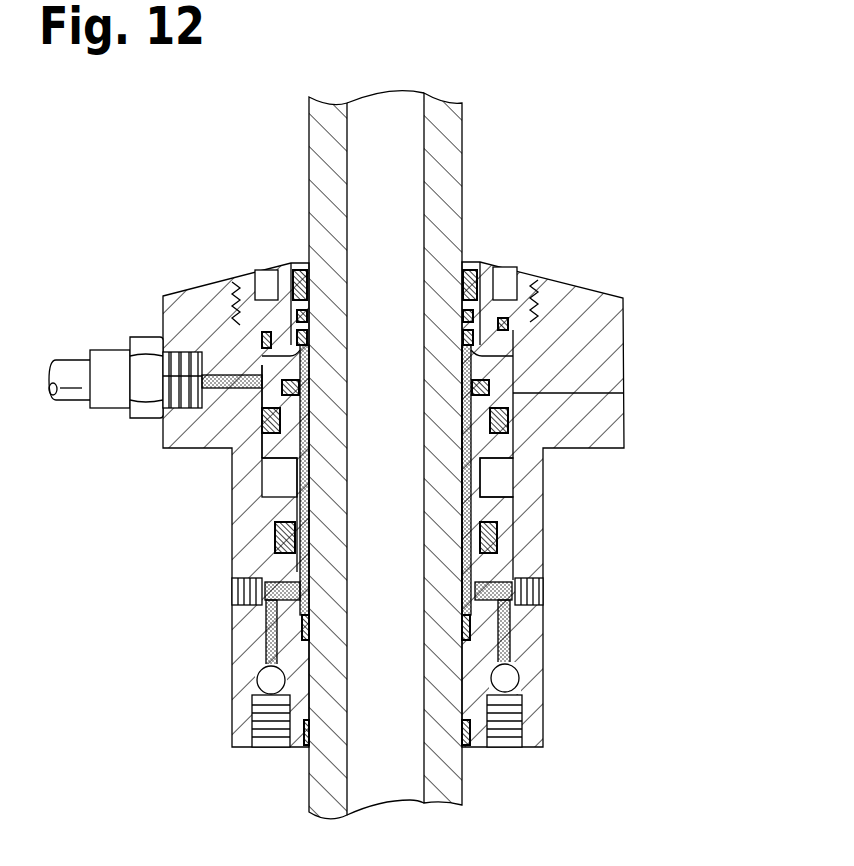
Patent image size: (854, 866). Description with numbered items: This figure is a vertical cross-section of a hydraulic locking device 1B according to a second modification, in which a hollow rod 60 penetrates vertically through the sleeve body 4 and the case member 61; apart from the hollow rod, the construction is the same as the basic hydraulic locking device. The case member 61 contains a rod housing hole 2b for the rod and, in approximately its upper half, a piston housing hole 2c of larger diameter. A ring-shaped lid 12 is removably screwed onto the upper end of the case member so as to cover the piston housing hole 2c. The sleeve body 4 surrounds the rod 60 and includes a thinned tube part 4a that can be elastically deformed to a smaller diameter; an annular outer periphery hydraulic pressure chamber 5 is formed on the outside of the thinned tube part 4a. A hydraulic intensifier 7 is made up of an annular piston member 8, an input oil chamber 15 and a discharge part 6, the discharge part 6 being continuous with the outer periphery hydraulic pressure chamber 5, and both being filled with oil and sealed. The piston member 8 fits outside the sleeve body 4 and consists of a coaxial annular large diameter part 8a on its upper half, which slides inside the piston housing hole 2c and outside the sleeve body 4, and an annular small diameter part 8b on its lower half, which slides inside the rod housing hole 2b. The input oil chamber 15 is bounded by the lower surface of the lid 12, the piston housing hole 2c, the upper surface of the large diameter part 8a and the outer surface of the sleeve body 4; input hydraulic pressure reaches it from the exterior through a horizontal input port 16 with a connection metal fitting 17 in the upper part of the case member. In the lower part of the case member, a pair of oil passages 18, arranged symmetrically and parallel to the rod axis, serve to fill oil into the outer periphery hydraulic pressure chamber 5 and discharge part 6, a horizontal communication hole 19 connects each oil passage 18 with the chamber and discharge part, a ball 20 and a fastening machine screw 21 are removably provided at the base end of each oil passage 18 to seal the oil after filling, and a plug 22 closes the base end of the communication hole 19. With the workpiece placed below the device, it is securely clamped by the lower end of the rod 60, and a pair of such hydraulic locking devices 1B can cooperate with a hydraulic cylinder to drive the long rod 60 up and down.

The hydraulic locking device 1B is at (658, 192).
The rod housing hole 2b is at (600, 393).
The piston housing hole 2c is at (508, 480).
The sleeve body 4 is at (320, 420).
The thinned tube part 4a is at (323, 528).
The outer periphery hydraulic pressure chamber 5 is at (322, 630).
The discharge part 6 is at (320, 570).
The hydraulic intensifier 7 is at (518, 372).
The piston member 8 is at (150, 488).
The large diameter part 8a is at (262, 487).
The small diameter part 8b is at (280, 523).
The lid 12 is at (293, 268).
The input oil chamber 15 is at (256, 345).
The input port 16 is at (212, 378).
The connection metal fitting 17 is at (166, 375).
The oil passage 18 is at (512, 625).
The communication hole 19 is at (492, 582).
The ball 20 is at (512, 678).
The fastening machine screw 21 is at (515, 727).
The plug 22 is at (248, 612).
The hollow rod 60 is at (440, 155).
The case member 61 is at (618, 432).